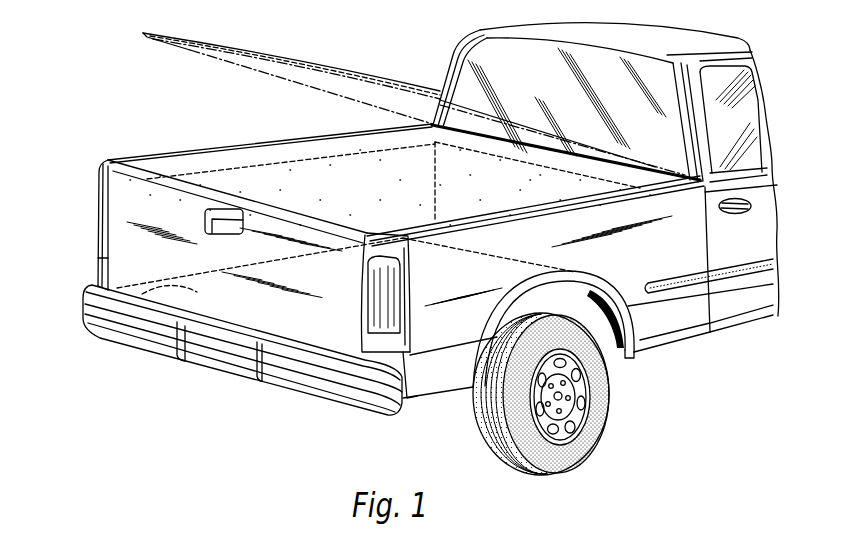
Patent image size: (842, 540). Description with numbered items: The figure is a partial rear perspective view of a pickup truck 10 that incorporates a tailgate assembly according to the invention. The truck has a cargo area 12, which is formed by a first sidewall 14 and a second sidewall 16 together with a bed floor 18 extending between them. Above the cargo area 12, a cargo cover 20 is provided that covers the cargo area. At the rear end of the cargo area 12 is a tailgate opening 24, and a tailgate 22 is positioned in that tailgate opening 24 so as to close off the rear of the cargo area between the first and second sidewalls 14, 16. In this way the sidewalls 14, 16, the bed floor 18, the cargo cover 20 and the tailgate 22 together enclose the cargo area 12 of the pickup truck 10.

The pickup truck 10 is at (76, 204).
The cargo area 12 is at (284, 168).
The first sidewall 14 is at (212, 178).
The second sidewall 16 is at (455, 276).
The bed floor 18 is at (140, 294).
The cargo cover 20 is at (304, 59).
The tailgate 22 is at (280, 313).
The tailgate opening 24 is at (241, 176).